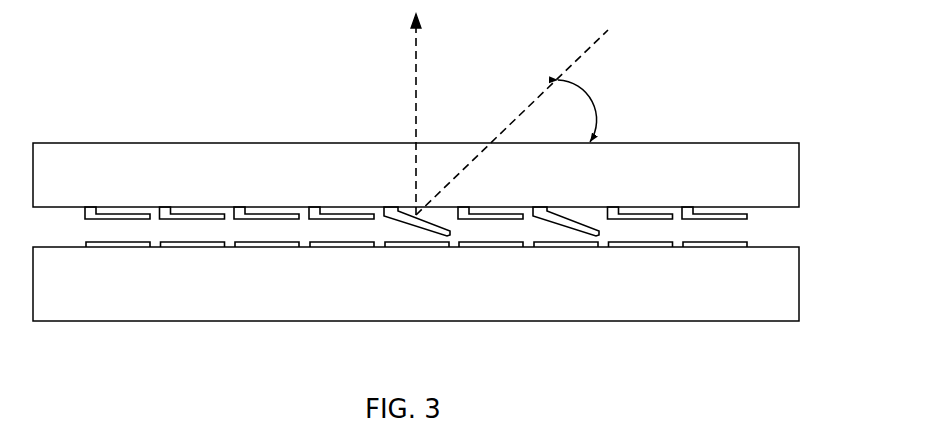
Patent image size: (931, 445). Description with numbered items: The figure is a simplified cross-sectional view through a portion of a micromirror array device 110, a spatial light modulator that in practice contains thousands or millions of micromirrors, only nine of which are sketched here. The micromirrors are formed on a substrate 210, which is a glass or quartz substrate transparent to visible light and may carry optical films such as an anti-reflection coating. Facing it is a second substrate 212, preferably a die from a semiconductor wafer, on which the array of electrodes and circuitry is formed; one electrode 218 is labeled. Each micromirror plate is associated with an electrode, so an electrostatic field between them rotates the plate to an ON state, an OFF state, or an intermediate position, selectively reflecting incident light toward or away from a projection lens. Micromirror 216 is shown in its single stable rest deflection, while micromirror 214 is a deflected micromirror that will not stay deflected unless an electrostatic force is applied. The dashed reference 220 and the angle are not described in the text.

The micromirror array device 110 is at (281, 126).
The substrate 210 is at (172, 153).
The substrate 212 is at (137, 310).
The micromirror 214 is at (568, 217).
The micromirror 216 is at (707, 205).
The electrode 218 is at (353, 251).
The incident light direction 220 is at (560, 73).